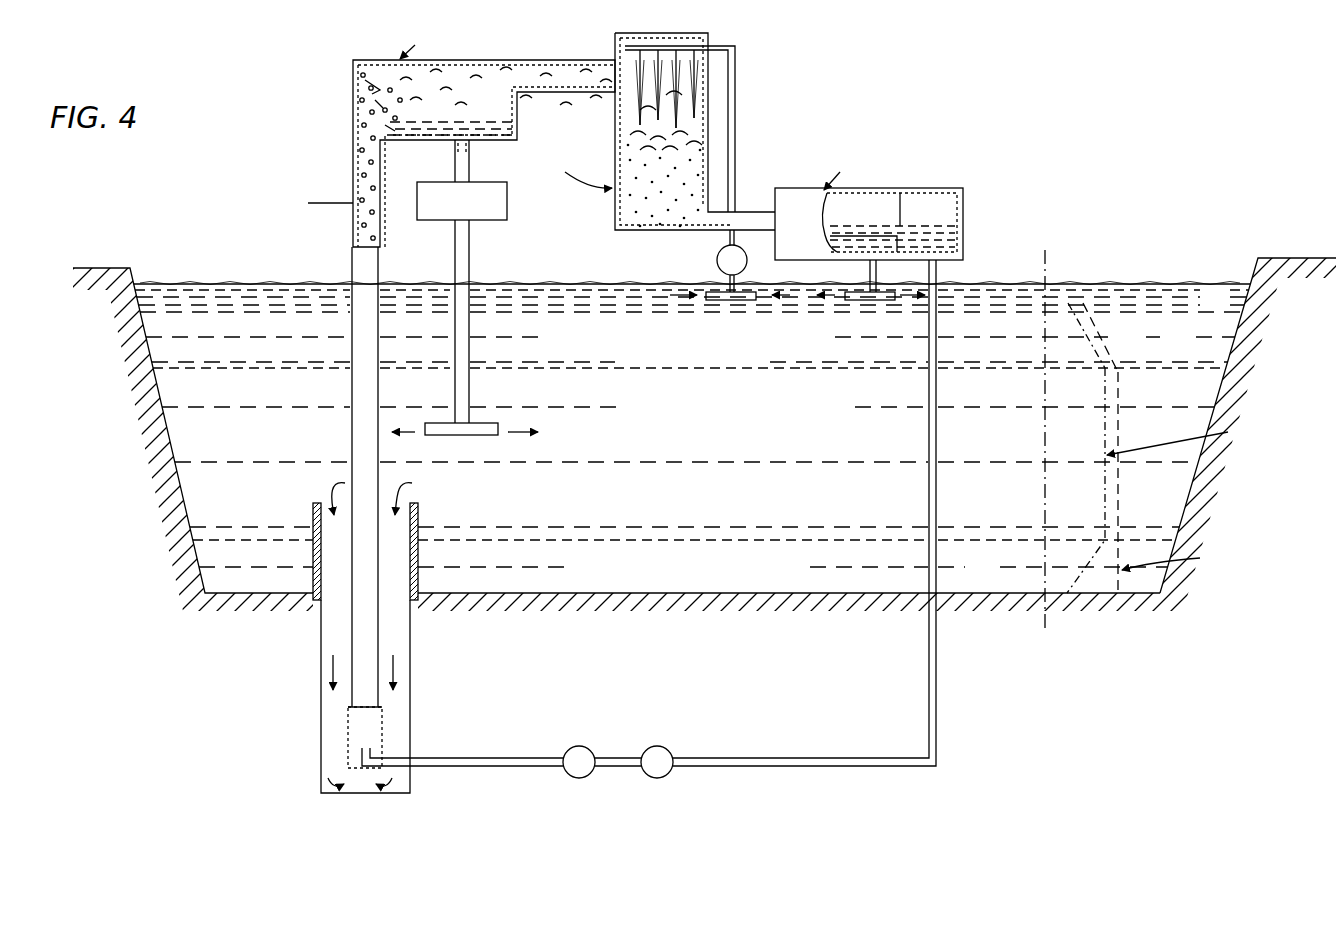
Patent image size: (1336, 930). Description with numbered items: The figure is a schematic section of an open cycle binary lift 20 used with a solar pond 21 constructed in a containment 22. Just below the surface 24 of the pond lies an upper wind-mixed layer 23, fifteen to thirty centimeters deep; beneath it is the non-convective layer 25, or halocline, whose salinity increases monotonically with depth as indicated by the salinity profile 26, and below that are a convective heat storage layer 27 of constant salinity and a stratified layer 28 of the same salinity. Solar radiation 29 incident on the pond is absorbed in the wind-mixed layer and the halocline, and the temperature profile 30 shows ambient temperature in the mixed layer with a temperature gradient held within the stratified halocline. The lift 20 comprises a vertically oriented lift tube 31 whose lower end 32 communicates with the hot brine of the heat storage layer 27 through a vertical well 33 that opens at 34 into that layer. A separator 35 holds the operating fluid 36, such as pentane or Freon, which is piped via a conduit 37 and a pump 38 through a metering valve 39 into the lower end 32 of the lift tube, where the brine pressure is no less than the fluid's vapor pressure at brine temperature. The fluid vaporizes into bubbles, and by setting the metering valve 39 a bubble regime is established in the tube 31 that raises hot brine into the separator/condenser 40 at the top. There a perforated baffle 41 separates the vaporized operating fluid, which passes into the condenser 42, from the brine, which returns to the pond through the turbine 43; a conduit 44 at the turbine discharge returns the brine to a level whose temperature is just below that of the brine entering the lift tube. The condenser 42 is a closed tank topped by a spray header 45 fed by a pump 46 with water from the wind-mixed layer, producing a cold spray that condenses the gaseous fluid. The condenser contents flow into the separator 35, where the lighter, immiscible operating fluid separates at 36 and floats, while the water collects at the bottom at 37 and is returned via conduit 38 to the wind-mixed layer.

The open cycle binary lift 20 is at (297, 130).
The solar pond 21 is at (1080, 244).
The containment 22 is at (1297, 258).
The upper wind-mixed layer 23 is at (1186, 290).
The surface of the pond 24 is at (1225, 309).
The non-convective layer (halocline) 25 is at (1185, 356).
The salinity profile 26 is at (1097, 343).
The convective heat storage layer 27 is at (1175, 436).
The stratified layer 28 is at (990, 579).
The solar radiation 29 is at (1087, 150).
The temperature profile 30 is at (1100, 436).
The lift tube 31 is at (352, 433).
The lower end of lift tube 32 is at (353, 772).
The vertical well 33 is at (398, 631).
The well opening 34 is at (313, 522).
The separator 35 is at (963, 200).
The operating fluid 36 is at (960, 238).
The conduit 37 is at (830, 250).
The pump 38 is at (870, 273).
The metering valve 39 is at (578, 746).
The separator/condenser 40 is at (368, 60).
The perforated baffle 41 is at (355, 86).
The condenser 42 is at (710, 118).
The turbine 43 is at (507, 205).
The conduit 44 is at (469, 255).
The spray header 45 is at (736, 48).
The pump 46 is at (716, 260).